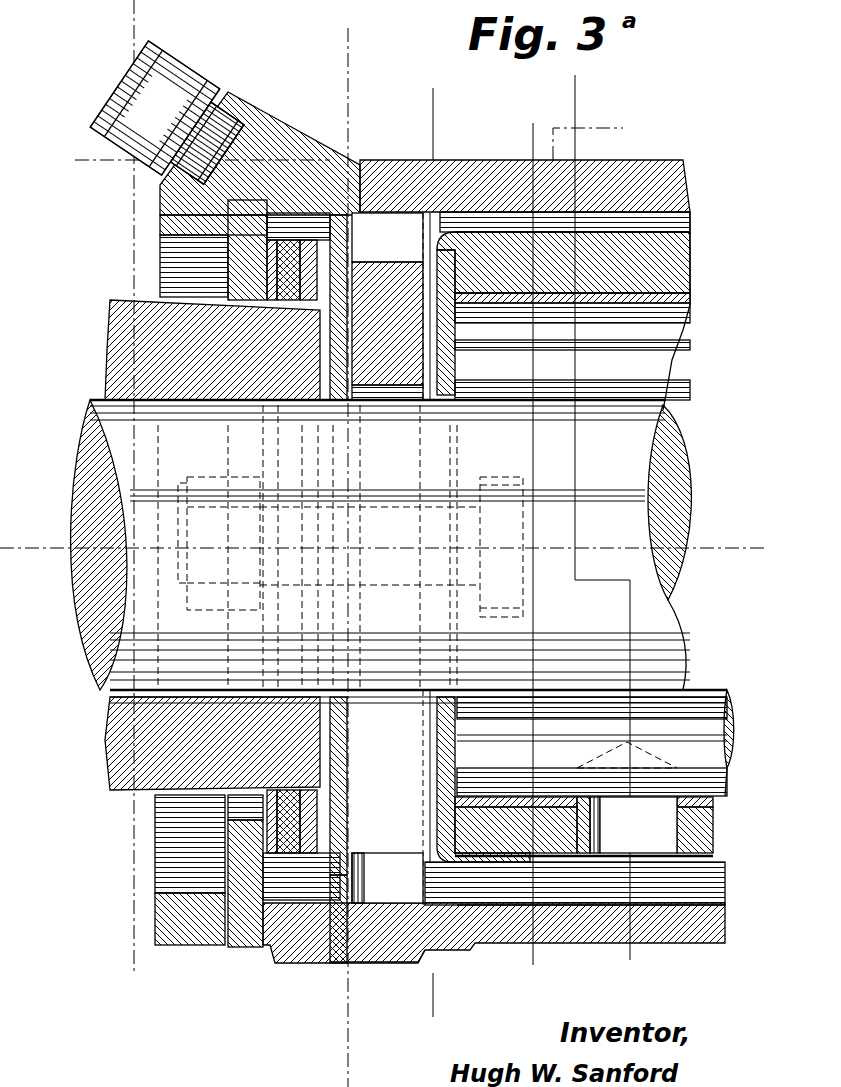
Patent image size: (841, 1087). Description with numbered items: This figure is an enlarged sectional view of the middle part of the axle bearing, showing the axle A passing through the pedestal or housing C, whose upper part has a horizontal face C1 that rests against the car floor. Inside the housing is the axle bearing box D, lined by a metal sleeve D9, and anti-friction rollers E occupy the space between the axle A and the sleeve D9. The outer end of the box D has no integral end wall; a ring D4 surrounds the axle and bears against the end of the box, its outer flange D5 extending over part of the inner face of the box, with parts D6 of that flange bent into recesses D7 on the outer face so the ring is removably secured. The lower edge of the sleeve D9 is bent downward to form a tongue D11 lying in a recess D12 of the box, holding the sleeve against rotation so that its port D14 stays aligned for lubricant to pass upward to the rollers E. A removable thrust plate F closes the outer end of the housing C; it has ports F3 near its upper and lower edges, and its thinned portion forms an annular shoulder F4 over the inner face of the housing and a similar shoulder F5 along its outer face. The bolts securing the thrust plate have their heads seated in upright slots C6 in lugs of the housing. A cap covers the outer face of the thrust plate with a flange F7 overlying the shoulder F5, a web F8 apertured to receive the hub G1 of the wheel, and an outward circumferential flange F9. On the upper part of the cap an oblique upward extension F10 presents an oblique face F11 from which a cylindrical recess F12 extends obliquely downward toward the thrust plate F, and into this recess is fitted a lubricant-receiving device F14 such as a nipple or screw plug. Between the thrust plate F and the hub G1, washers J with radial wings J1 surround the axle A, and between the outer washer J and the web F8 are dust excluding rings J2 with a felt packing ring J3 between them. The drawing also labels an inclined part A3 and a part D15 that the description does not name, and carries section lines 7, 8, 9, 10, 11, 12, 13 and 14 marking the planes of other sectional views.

The section line 7 is at (602, 519).
The section line 8 is at (531, 545).
The section line 9 is at (450, 102).
The section line 10 is at (330, 41).
The section line 11 is at (372, 81).
The section line 12 is at (132, 26).
The section line 13 is at (75, 171).
The section line 14 is at (50, 550).
The axle A is at (630, 456).
The inclined nozzle body A3 is at (262, 185).
The pedestal or housing C is at (675, 945).
The horizontal face C1 is at (655, 162).
The upright slot C6 is at (340, 547).
The axle box D is at (660, 272).
The ring D4 is at (452, 361).
The outer flange D5 is at (488, 250).
The bent parts of flange D6 is at (538, 247).
The recesses D7 is at (585, 280).
The metal sleeve D9 is at (713, 803).
The tongue D11 is at (450, 868).
The recess D12 is at (473, 870).
The port D14 is at (610, 800).
The sleeve wall D15 is at (700, 866).
The anti-friction rollers E is at (640, 366).
The thrust plate F is at (405, 146).
The port F3 is at (500, 146).
The annular shoulder F4 is at (390, 958).
The shoulder F5 is at (350, 903).
The cap flange F7 is at (247, 877).
The cap web F8 is at (233, 948).
The circumferential flange F9 is at (210, 976).
The oblique upward extension F10 is at (252, 128).
The oblique face F11 is at (226, 108).
The cylindrical recess F12 is at (207, 100).
The lubricant device F14 is at (140, 158).
The hub G1 is at (143, 750).
The washers J is at (348, 333).
The radial wings J1 is at (348, 238).
The dust excluding rings J2 is at (260, 222).
The felt ring J3 is at (240, 263).